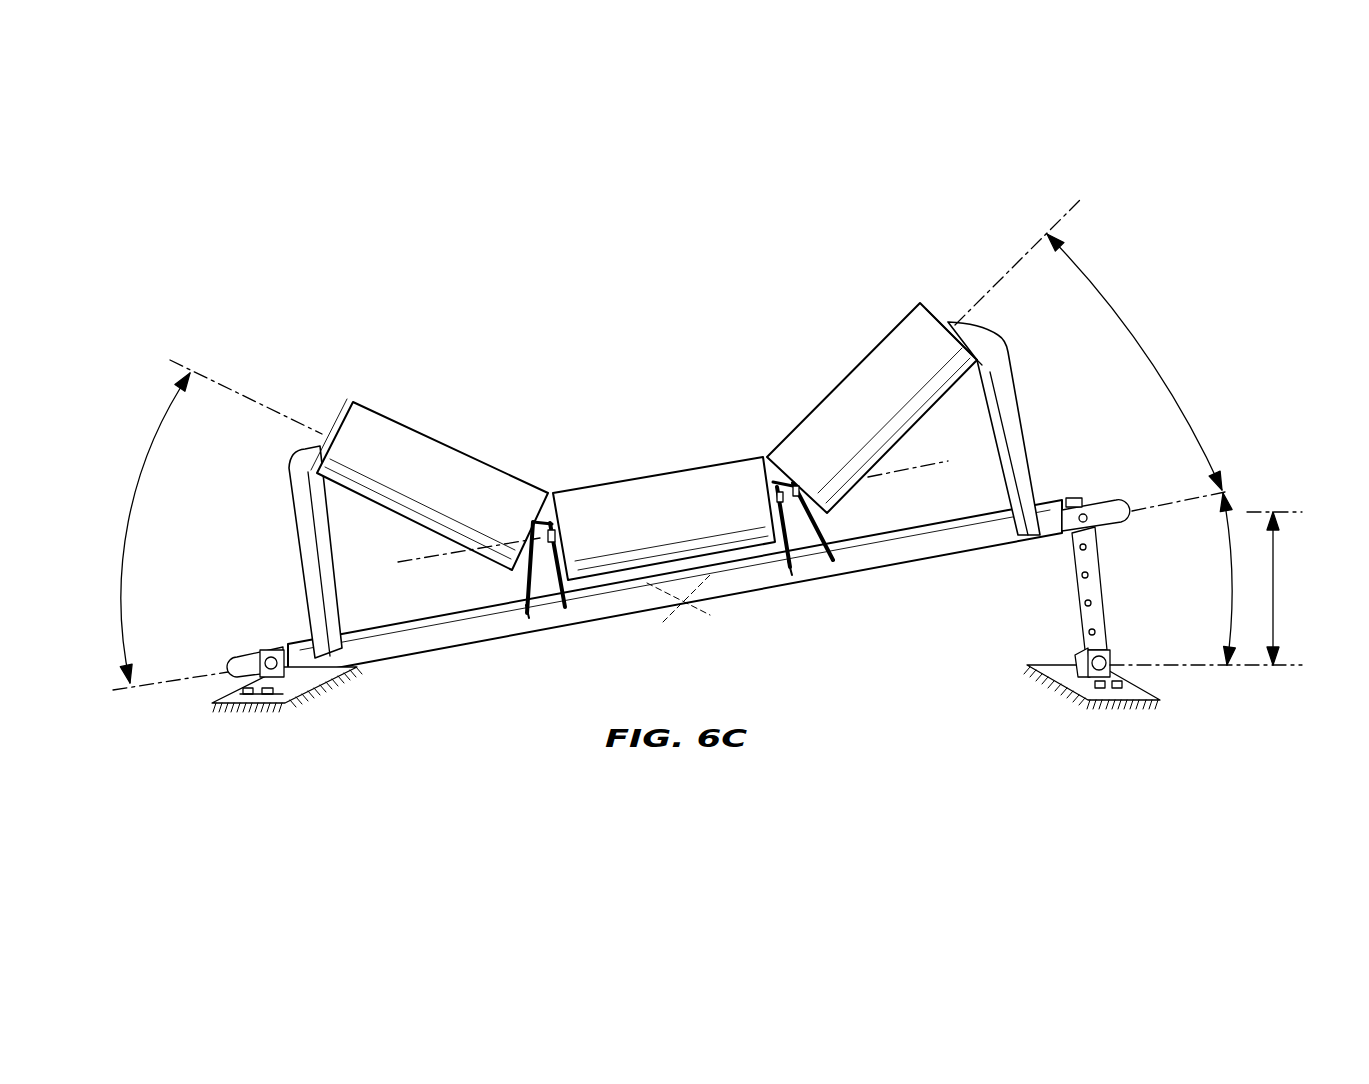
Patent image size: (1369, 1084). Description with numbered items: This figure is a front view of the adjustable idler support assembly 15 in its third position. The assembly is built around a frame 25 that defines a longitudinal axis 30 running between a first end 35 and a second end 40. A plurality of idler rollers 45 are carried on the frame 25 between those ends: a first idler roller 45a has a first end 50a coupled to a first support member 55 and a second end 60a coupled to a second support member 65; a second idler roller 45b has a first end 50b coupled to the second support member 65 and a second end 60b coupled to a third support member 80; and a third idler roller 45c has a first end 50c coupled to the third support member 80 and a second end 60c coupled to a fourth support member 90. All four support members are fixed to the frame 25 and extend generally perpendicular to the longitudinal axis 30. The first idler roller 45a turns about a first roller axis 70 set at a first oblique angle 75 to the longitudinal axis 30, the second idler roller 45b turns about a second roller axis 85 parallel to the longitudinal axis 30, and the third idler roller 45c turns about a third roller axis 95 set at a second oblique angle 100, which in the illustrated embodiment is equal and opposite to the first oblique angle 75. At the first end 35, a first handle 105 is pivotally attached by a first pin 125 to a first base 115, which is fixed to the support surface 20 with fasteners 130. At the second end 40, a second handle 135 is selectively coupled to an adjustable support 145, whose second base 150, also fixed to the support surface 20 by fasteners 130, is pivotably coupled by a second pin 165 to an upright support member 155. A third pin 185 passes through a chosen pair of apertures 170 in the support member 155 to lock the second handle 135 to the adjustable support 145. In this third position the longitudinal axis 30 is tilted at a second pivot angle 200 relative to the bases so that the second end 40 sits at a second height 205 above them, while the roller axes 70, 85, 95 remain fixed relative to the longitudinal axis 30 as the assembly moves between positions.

The adjustable idler support assembly 15 is at (703, 320).
The support surface 20 is at (293, 698).
The frame 25 is at (415, 658).
The longitudinal axis 30 is at (145, 688).
The first end 35 is at (343, 695).
The second end 40 is at (983, 572).
The idler rollers 45 is at (607, 407).
The first idler roller 45a is at (440, 438).
The second idler roller 45b is at (647, 475).
The third idler roller 45c is at (860, 363).
The first end 50a is at (429, 456).
The first end 50b is at (664, 497).
The first end 50c is at (872, 404).
The first support member 55 is at (330, 580).
The second end 60a is at (535, 520).
The second end 60b is at (767, 482).
The second end 60c is at (940, 313).
The second support member 65 is at (533, 598).
The first roller axis 70 is at (235, 392).
The first oblique angle 75 is at (128, 522).
The third support member 80 is at (813, 547).
The second roller axis 85 is at (903, 474).
The fourth support member 90 is at (1013, 433).
The third roller axis 95 is at (1007, 270).
The second oblique angle 100 is at (1158, 345).
The first handle 105 is at (250, 648).
The first base 115 is at (243, 694).
The first pin 125 is at (245, 657).
The fasteners 130 is at (237, 691).
The second handle 135 is at (1123, 503).
The adjustable support 145 is at (1110, 453).
The second base 150 is at (1127, 690).
The support member 155 is at (1077, 500).
The second pin 165 is at (1110, 663).
The apertures 170 is at (1062, 588).
The third pin 185 is at (1088, 512).
The second pivot angle 200 is at (1228, 585).
The second height 205 is at (1277, 578).